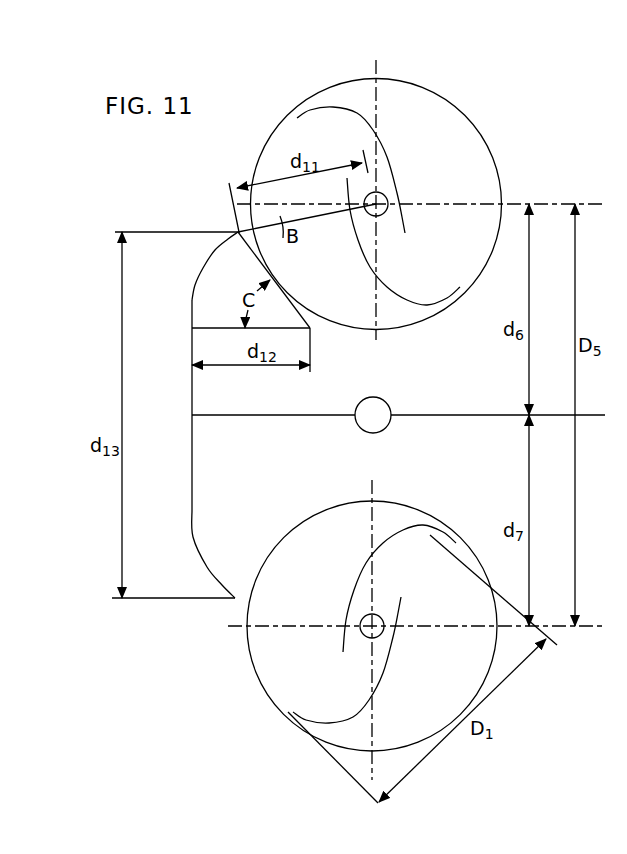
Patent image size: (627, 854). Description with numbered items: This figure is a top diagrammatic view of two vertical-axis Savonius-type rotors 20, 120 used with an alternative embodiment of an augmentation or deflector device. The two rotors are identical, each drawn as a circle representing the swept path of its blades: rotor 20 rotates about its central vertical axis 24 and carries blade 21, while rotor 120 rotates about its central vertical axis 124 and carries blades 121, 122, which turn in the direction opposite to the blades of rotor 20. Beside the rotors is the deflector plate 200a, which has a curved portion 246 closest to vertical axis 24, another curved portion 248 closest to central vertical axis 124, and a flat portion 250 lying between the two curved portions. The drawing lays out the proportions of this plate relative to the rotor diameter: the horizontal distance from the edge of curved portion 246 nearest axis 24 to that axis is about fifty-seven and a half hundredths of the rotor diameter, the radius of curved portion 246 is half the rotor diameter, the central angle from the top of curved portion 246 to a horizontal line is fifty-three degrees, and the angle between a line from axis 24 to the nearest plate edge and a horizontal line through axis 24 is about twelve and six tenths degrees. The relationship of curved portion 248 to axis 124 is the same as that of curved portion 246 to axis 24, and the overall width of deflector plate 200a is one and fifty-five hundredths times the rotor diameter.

The Savonius-type rotor 20 is at (465, 109).
The rotor blade 21 is at (316, 110).
The central vertical axis 24 is at (381, 200).
The Savonius-type rotor 120 is at (495, 680).
The rotor blade 121 is at (322, 727).
The rotor blade 122 is at (418, 530).
The central vertical axis 124 is at (374, 631).
The deflector plate 200a is at (206, 266).
The curved portion 246 is at (192, 303).
The curved portion 248 is at (208, 567).
The flat portion 250 is at (192, 438).